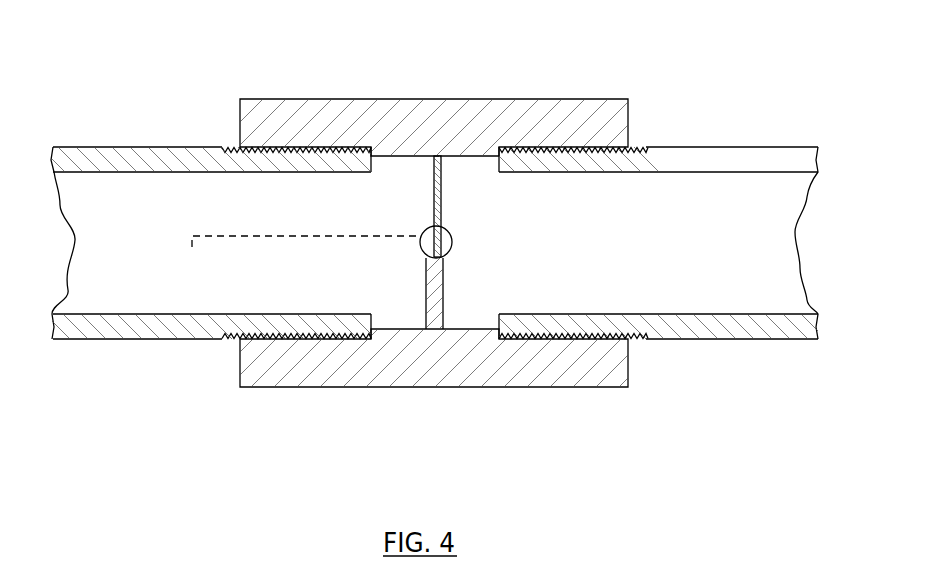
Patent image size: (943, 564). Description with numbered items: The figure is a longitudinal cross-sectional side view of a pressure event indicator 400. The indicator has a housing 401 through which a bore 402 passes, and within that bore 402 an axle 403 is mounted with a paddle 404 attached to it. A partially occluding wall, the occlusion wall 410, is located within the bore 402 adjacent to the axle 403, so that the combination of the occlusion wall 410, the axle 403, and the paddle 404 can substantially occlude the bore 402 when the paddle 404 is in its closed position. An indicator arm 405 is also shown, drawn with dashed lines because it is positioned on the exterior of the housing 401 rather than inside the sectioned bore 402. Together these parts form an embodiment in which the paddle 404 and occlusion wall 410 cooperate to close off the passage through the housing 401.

The pressure event indicator 400 is at (211, 85).
The housing 401 is at (585, 103).
The bore 402 is at (480, 244).
The axle 403 is at (424, 246).
The paddle 404 is at (441, 190).
The indicator arm 405 is at (218, 240).
The occlusion wall 410 is at (441, 291).